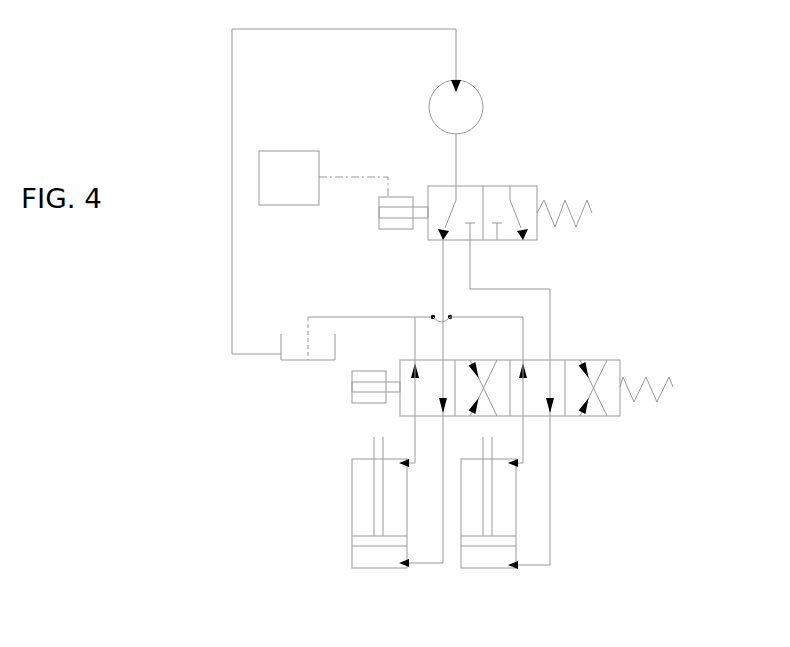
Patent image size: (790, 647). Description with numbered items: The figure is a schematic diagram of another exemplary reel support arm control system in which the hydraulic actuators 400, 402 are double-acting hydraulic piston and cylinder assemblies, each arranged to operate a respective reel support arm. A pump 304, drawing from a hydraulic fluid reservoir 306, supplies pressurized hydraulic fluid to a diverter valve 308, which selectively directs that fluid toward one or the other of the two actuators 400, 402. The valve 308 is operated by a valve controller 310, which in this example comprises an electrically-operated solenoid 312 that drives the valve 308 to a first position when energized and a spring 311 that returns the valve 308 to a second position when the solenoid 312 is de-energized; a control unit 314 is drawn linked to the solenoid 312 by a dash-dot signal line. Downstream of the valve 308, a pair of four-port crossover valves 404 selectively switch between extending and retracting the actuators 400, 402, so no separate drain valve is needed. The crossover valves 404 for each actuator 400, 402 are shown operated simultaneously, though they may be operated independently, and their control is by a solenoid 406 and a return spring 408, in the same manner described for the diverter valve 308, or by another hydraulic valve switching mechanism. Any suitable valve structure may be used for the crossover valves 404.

The valve controller 310 is at (358, 96).
The pump 304 is at (470, 112).
The valve 308 is at (502, 190).
The spring 311 is at (592, 215).
The solenoid 312 is at (385, 213).
The controller 314 is at (291, 165).
The hydraulic fluid reservoir 306 is at (292, 345).
The crossover valve 404 is at (478, 363).
The solenoid 406 is at (367, 384).
The return spring 408 is at (648, 392).
The hydraulic actuator 400 is at (358, 520).
The hydraulic actuator 402 is at (513, 530).